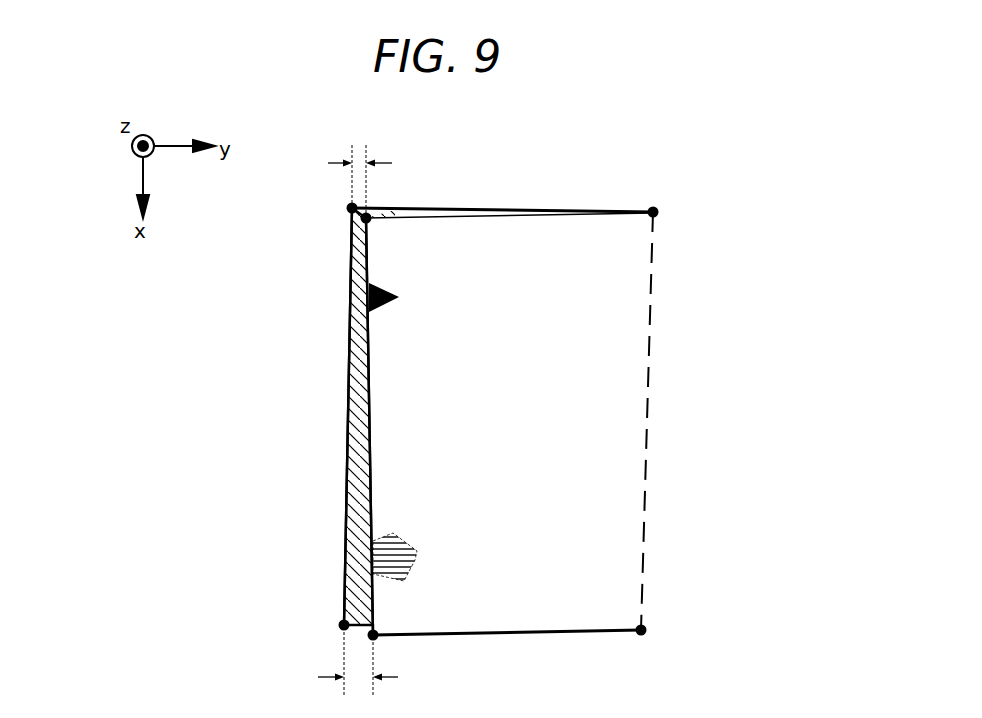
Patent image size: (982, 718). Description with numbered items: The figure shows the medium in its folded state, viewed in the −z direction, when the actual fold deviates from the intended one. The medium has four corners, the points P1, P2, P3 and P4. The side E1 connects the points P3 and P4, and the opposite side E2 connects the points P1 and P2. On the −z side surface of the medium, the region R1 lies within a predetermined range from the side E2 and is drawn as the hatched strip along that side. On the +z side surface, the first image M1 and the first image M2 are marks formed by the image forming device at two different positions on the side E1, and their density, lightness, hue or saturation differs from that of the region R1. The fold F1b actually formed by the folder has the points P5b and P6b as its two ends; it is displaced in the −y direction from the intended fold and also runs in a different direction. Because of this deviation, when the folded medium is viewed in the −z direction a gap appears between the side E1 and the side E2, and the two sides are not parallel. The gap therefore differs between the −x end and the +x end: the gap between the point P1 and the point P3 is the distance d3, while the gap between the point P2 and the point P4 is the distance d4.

The point P1 is at (348, 209).
The point P2 is at (340, 624).
The point P3 is at (372, 212).
The point P4 is at (378, 640).
The point P5b is at (658, 208).
The point P6b is at (642, 636).
The region R1 is at (348, 390).
The side E1 is at (372, 447).
The side E2 is at (348, 478).
The first image M1 is at (392, 298).
The first image M2 is at (402, 555).
The fold F1b is at (650, 461).
The distance d3 is at (341, 179).
The distance d4 is at (341, 663).